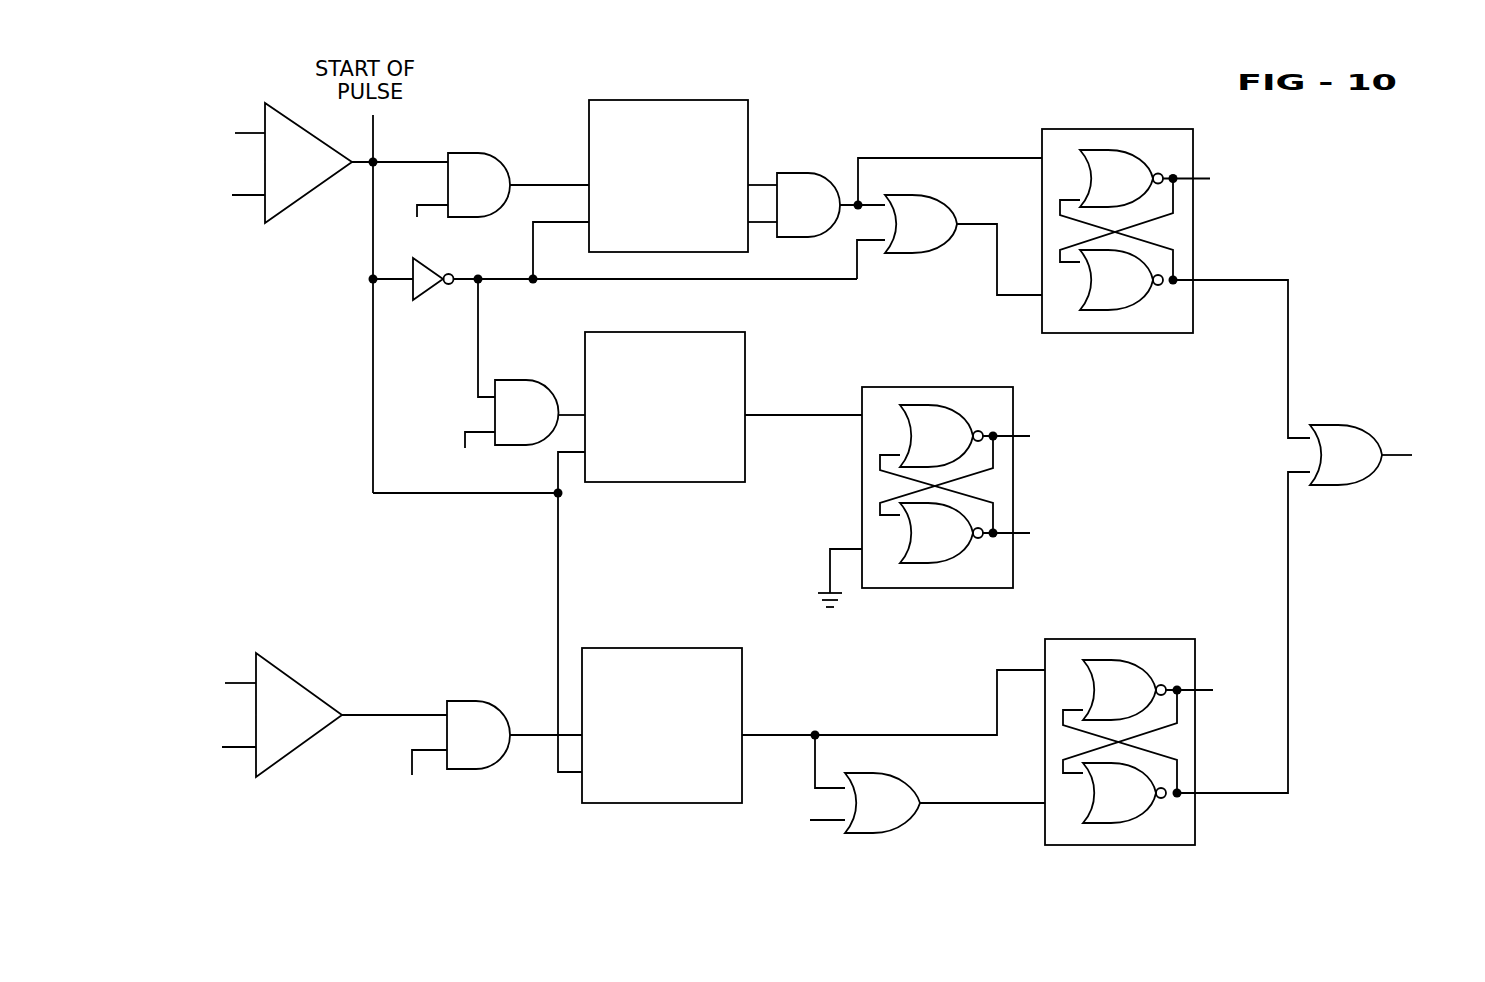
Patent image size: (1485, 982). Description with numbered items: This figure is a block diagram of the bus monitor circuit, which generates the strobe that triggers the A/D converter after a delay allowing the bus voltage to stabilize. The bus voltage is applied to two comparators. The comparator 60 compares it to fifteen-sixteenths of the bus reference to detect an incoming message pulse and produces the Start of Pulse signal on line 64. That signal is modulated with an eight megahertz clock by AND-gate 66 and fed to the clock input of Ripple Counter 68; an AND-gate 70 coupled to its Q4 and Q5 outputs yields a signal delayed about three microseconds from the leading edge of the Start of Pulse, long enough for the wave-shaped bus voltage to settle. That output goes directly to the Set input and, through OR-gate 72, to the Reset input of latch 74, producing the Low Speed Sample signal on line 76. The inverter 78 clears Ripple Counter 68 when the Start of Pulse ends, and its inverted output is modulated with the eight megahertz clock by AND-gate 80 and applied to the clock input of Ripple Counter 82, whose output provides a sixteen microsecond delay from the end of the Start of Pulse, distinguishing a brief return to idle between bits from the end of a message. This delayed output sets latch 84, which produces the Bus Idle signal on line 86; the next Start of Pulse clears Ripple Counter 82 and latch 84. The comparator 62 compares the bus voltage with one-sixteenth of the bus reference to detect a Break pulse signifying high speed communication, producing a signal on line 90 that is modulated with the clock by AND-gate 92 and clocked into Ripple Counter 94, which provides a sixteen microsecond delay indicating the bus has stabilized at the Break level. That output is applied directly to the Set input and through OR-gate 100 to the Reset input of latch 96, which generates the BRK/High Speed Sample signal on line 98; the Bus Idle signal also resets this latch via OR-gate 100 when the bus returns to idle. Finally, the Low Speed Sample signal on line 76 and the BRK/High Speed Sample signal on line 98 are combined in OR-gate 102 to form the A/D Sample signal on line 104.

The comparator 60 is at (241, 196).
The comparator 62 is at (232, 682).
The line 64 is at (413, 304).
The AND-gate 66 is at (487, 171).
The Ripple Counter 68 is at (676, 169).
The AND-gate 70 is at (895, 171).
The OR-gate 72 is at (963, 253).
The latch 74 is at (1166, 230).
The line 76 is at (1252, 332).
The inverter 78 is at (629, 312).
The AND-gate 80 is at (510, 377).
The Ripple Counter 82 is at (708, 538).
The latch 84 is at (969, 497).
The line 86 is at (1058, 506).
The line 90 is at (394, 670).
The AND-gate 92 is at (481, 715).
The Ripple Counter 94 is at (805, 742).
The latch 96 is at (1135, 709).
The line 98 is at (1284, 666).
The OR-gate 100 is at (901, 817).
The OR-gate 102 is at (1346, 491).
The line 104 is at (1430, 442).